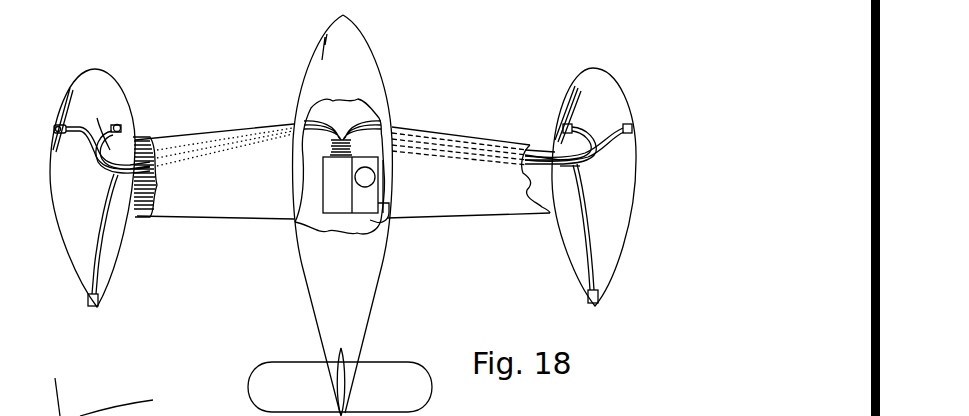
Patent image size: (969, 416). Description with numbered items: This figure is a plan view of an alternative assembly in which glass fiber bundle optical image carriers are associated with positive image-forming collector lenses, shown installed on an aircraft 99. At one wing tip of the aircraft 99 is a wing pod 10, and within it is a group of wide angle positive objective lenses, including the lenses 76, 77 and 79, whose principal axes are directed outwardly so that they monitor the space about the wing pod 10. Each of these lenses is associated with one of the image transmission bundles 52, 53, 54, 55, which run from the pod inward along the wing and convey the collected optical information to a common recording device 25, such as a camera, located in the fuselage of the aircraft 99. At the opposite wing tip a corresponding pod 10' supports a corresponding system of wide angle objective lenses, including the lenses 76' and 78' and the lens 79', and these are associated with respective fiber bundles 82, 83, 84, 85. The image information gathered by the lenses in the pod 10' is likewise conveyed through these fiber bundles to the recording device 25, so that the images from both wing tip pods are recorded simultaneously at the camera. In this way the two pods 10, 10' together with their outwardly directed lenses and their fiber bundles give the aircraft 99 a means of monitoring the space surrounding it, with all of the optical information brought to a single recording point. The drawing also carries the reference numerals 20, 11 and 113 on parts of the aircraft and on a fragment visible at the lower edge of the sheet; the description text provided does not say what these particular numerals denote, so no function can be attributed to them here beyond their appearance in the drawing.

The wing pod 10 is at (73, 188).
The corresponding pod 10' is at (627, 187).
The fuselage portion 11 is at (129, 401).
The wing 20 is at (183, 213).
The common recording device 25 is at (387, 222).
The image transmission bundle 52 is at (126, 133).
The image transmission bundle 53 is at (56, 113).
The image transmission bundle 54 is at (97, 120).
The image transmission bundle 55 is at (93, 271).
The wide angle positive objective lens 76 is at (143, 105).
The wide angle objective lens 76' is at (547, 107).
The wide angle positive objective lens 77 is at (53, 128).
The wide angle objective lens 78' is at (649, 121).
The wide angle positive objective lens 79 is at (111, 309).
The wide angle objective lens 79' is at (615, 308).
The fiber bundle 82 is at (555, 138).
The fiber bundle 83 is at (628, 124).
The fiber bundle 84 is at (625, 168).
The fiber bundle 85 is at (598, 255).
The aircraft 99 is at (310, 283).
The strut 113 is at (56, 397).